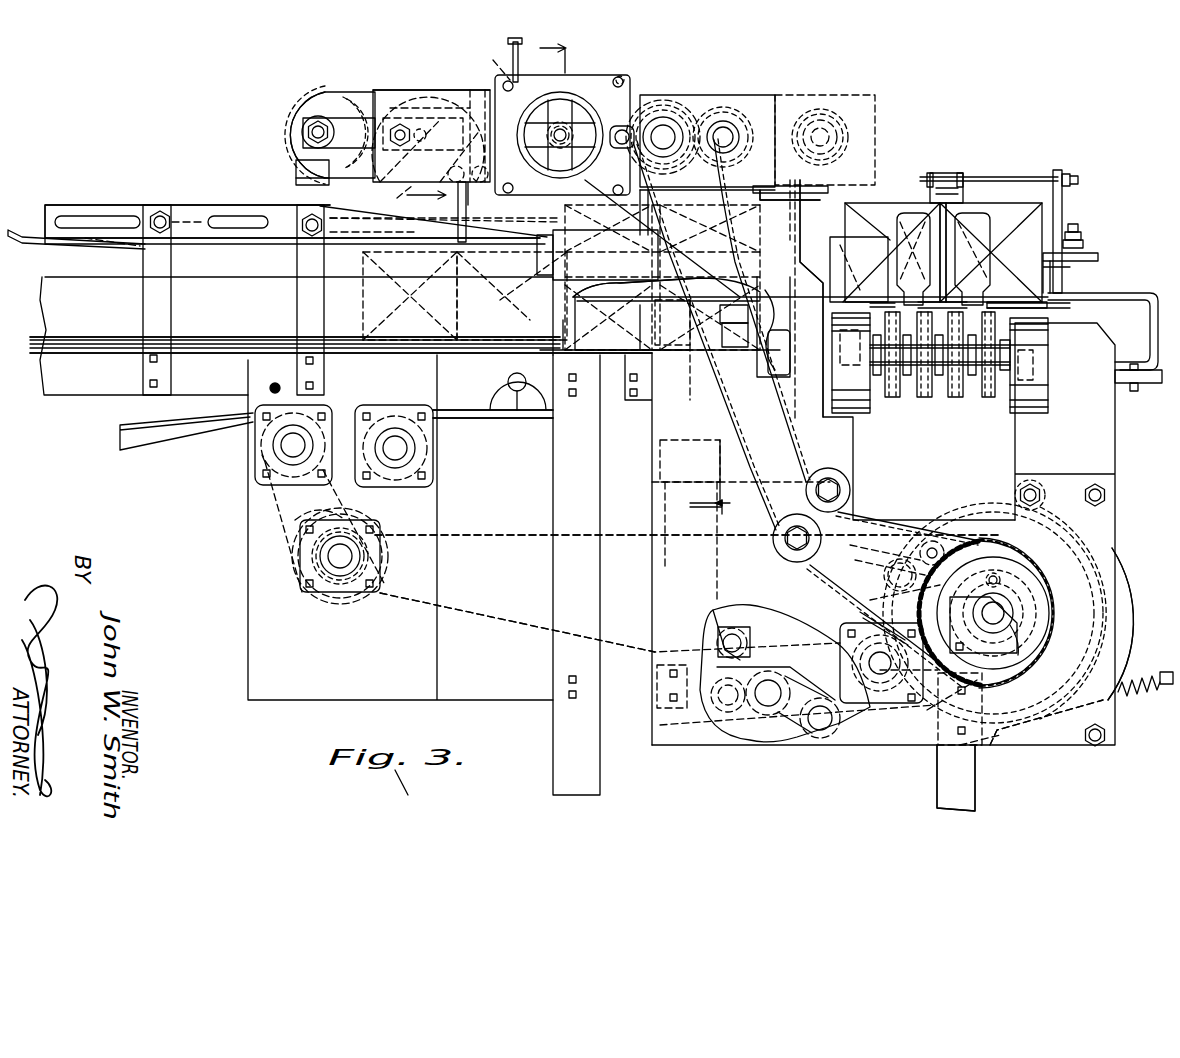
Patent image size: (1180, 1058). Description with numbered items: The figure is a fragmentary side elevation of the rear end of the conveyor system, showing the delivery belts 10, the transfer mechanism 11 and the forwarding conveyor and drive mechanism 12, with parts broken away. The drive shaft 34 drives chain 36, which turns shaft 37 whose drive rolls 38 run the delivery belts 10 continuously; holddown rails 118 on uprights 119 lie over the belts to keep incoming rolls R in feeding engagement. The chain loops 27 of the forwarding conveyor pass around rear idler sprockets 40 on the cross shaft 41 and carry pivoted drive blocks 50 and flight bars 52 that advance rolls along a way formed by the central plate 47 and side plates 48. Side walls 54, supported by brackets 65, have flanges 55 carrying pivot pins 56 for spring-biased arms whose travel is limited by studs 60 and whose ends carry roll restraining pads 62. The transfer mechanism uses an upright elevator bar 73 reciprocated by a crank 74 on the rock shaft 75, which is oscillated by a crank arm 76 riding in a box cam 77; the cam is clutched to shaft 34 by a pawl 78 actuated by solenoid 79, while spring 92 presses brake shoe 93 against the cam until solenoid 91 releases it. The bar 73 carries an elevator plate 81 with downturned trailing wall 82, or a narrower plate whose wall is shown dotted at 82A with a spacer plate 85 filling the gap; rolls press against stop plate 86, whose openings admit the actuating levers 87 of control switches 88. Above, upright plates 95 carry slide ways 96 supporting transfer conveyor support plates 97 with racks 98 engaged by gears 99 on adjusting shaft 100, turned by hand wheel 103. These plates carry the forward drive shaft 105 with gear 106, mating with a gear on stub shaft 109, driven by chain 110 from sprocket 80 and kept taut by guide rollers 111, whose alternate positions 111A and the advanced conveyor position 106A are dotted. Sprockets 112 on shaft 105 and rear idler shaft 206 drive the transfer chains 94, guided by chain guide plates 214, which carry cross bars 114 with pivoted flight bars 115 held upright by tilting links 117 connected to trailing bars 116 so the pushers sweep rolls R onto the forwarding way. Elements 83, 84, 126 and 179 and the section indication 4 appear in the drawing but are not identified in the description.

The delivery belts 10 is at (240, 345).
The transfer mechanism 11 is at (440, 78).
The forwarding conveyor and drive mechanism 12 is at (946, 155).
The chain loops 27 is at (922, 398).
The drive shaft 34 is at (1007, 613).
The chain 36 is at (490, 532).
The shaft 37 is at (330, 556).
The drive rolls 38 is at (262, 506).
The rear idler sprockets 40 is at (988, 398).
The cross shaft 41 is at (1045, 372).
The central plate 47 is at (975, 283).
The side plates 48 is at (862, 297).
The drive blocks 50 is at (973, 312).
The flight bars 52 is at (958, 233).
The side walls 54 is at (1057, 268).
The flanges 55 is at (1095, 258).
The pivot pins 56 is at (1075, 238).
The studs 60 is at (1082, 243).
The roll restraining pads 62 is at (1043, 240).
The brackets 65 is at (1105, 342).
The elevator bar 73 is at (718, 630).
The crank 74 is at (790, 630).
The rock shaft 75 is at (882, 674).
The crank arm 76 is at (908, 537).
The box cam 77 is at (945, 745).
The engaging pawl 78 is at (1035, 590).
The solenoid 79 is at (872, 592).
The sprocket 80 is at (952, 560).
The elevator plate 81 is at (632, 298).
The trailing wall 82 is at (642, 350).
The alternate elevator plate wall 82A is at (693, 347).
The bar 83 is at (507, 410).
The pin 84 is at (517, 393).
The spacer plate 85 is at (660, 317).
The stop plate 86 is at (760, 277).
The actuating levers 87 is at (768, 295).
The control switches 88 is at (780, 378).
The solenoid 91 is at (1030, 745).
The spring 92 is at (1135, 694).
The brake shoe 93 is at (1120, 666).
The transfer chains 94 is at (324, 92).
The upright plates 95 is at (801, 215).
The slide ways 96 is at (296, 176).
The transfer conveyor support plates 97 is at (403, 92).
The racks 98 is at (645, 100).
The gears 99 is at (590, 148).
The adjusting shaft 100 is at (548, 135).
The hand wheel 103 is at (567, 78).
The forward drive shaft 105 is at (725, 135).
The gear 106 is at (720, 107).
The advanced transfer conveyor position 106A is at (838, 98).
The stub shaft 109 is at (665, 135).
The chain 110 is at (790, 432).
The guide rollers 111 is at (815, 490).
The alternate guide roller positions 111A is at (772, 542).
The sprockets 112 is at (305, 108).
The cross bars 114 is at (495, 59).
The flight bars 115 is at (533, 82).
The trailing bars 116 is at (638, 58).
The tilting links 117 is at (533, 112).
The holddown rails 118 is at (104, 205).
The uprights 119 is at (150, 254).
The nut 126 is at (166, 216).
The bearing 179 is at (1007, 627).
The rear idler shaft 206 is at (320, 128).
The chain guide plates 214 is at (430, 105).
The section line 4 is at (622, 277).
The rolls R is at (983, 203).